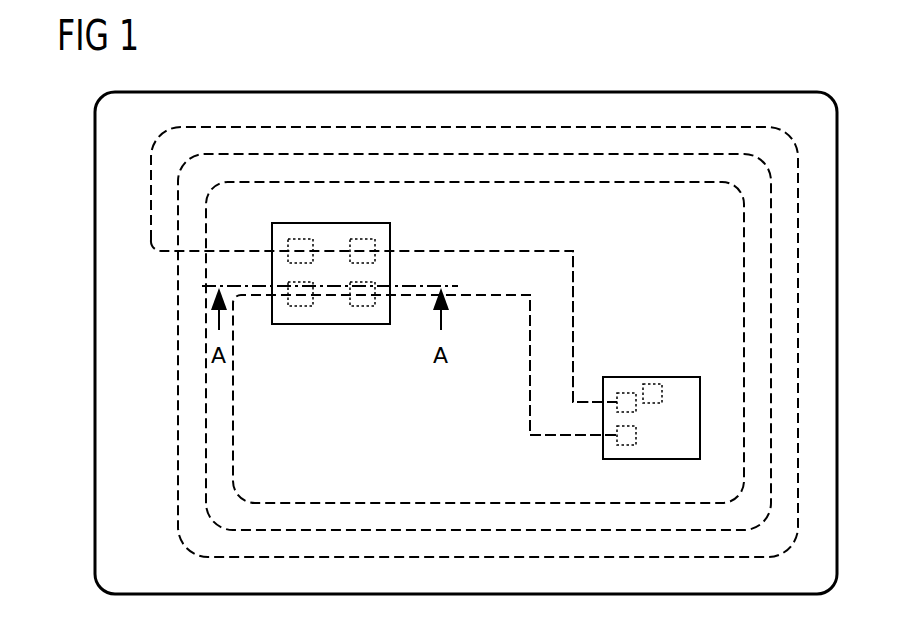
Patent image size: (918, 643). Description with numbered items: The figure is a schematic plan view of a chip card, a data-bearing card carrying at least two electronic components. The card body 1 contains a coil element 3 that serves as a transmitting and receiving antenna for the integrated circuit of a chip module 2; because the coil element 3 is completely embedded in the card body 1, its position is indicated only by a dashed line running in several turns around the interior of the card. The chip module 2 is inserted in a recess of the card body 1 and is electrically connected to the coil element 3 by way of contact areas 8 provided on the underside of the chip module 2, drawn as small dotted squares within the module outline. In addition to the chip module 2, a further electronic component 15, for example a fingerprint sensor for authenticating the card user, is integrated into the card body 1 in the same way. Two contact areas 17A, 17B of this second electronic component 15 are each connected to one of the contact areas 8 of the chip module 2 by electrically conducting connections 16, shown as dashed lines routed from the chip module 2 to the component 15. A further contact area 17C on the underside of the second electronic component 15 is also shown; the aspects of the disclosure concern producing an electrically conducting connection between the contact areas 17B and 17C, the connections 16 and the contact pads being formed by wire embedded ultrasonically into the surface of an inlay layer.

The card body 1 is at (108, 124).
The chip module 2 is at (380, 314).
The coil element 3 is at (151, 165).
The contact areas 8 is at (358, 258).
The further electronic component 15 is at (670, 450).
The electrically conducting connections 16 is at (531, 306).
The contact area 17A is at (626, 446).
The contact area 17B is at (627, 393).
The further contact area 17C is at (653, 384).